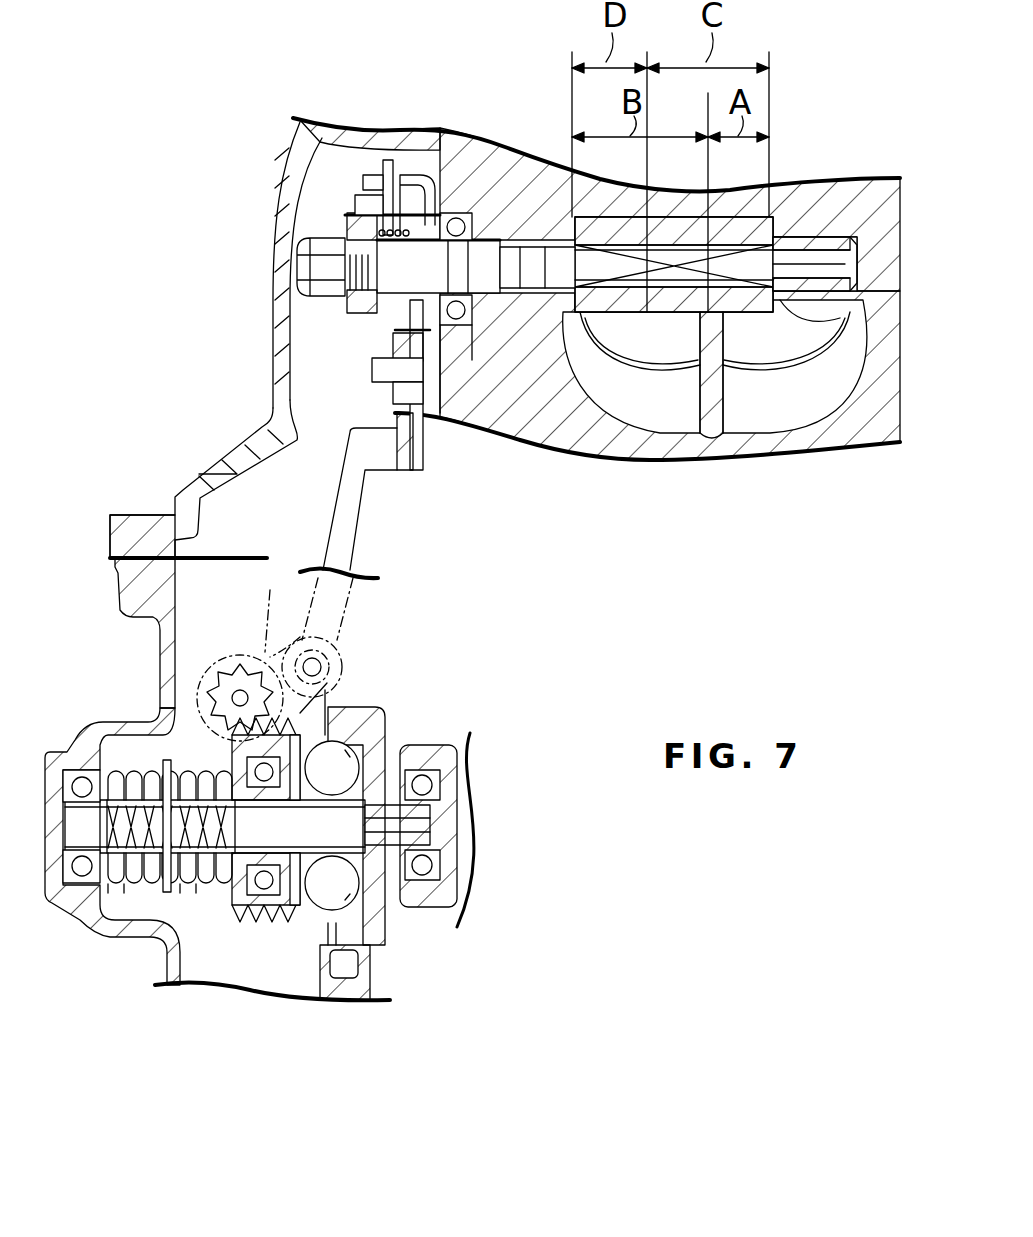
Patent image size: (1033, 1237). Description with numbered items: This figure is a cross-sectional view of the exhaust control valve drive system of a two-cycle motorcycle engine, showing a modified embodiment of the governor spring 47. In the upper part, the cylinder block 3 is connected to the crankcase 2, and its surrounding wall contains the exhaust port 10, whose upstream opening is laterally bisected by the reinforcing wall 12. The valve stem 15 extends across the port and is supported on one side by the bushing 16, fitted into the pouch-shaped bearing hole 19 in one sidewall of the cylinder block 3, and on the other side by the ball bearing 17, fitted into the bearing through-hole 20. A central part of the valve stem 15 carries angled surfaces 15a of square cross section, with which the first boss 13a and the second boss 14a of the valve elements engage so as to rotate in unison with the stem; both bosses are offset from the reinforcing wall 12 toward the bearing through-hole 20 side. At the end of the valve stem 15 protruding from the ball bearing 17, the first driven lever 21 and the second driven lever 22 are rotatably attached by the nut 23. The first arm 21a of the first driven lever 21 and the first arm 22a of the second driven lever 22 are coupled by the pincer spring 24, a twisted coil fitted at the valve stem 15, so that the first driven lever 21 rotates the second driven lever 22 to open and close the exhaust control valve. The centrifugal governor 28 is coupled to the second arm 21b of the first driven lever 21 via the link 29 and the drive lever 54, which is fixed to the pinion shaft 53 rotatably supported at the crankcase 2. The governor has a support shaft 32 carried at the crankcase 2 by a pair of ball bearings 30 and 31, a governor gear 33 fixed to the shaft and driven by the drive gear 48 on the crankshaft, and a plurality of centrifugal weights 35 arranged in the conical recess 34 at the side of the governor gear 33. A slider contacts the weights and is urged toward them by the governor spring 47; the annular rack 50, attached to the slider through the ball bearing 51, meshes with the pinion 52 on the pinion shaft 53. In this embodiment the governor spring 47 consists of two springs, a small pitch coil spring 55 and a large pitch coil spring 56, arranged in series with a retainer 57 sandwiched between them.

The crankcase 2 is at (135, 583).
The cylinder block 3 is at (523, 172).
The exhaust port 10 is at (710, 455).
The reinforcing wall 12 is at (717, 383).
The first boss 13a is at (730, 300).
The second boss 14a is at (627, 313).
The valve stem 15 is at (475, 255).
The angled surfaces 15a is at (677, 273).
The bushing 16 is at (790, 290).
The ball bearing 17 is at (453, 323).
The pouch-shaped bearing hole 19 is at (838, 237).
The bearing through-hole 20 is at (503, 293).
The first driven lever 21 is at (448, 222).
The first arm 21a is at (368, 170).
The second arm 21b is at (415, 410).
The second driven lever 22 is at (355, 300).
The first arm 22a is at (362, 203).
The nut 23 is at (316, 240).
The pincer spring 24 is at (390, 160).
The centrifugal governor 28 is at (410, 692).
The link 29 is at (330, 527).
The ball bearing 30 is at (82, 785).
The ball bearing 31 is at (445, 787).
The support shaft 32 is at (420, 820).
The governor gear 33 is at (377, 933).
The conical recess 34 is at (330, 925).
The centrifugal weights 35 is at (340, 762).
The governor spring 47 is at (82, 1018).
The drive gear 48 is at (337, 1010).
The annular rack 50 is at (325, 662).
The ball bearing 51 is at (263, 795).
The pinion 52 is at (250, 657).
The pinion shaft 53 is at (222, 670).
The drive lever 54 is at (265, 604).
The small pitch coil spring 55 is at (140, 887).
The large pitch coil spring 56 is at (187, 890).
The retainer 57 is at (163, 766).